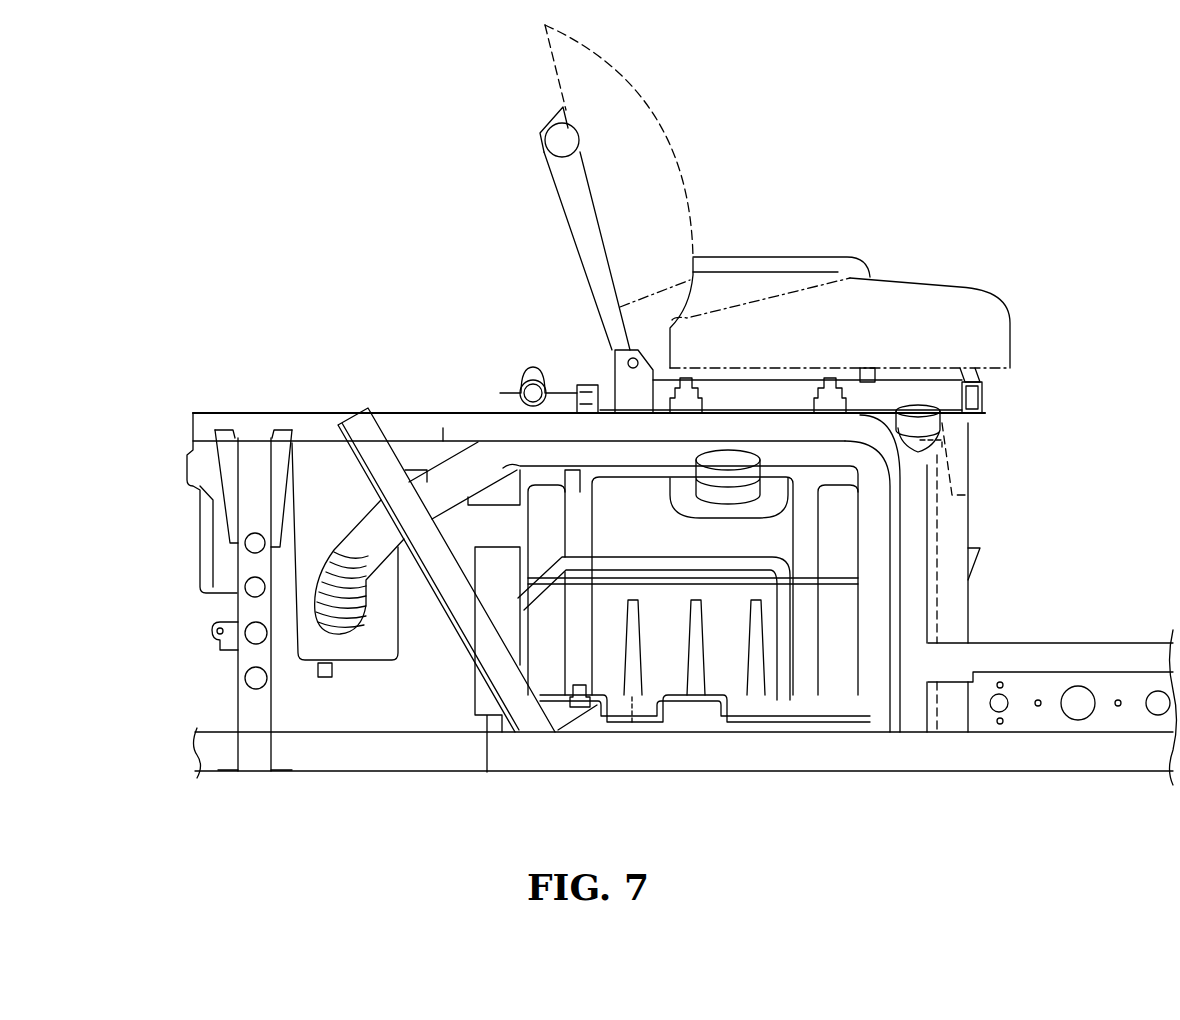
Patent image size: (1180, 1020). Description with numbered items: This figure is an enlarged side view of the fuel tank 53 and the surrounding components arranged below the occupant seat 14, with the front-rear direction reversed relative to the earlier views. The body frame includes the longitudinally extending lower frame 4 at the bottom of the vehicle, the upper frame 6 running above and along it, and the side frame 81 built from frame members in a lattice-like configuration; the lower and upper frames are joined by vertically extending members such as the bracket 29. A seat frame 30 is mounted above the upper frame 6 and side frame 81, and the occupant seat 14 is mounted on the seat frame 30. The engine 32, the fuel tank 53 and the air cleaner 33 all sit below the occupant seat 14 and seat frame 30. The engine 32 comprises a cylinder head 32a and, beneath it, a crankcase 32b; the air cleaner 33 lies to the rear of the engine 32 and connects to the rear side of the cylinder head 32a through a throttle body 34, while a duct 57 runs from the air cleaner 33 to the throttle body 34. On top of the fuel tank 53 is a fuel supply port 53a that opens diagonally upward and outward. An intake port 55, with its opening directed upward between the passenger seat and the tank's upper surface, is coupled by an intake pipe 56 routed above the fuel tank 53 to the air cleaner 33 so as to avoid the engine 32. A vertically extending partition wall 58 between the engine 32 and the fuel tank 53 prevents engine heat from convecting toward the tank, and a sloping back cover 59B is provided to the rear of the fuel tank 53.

The occupant seat 14 is at (662, 118).
The seat frame 30 is at (576, 243).
The fuel supply port 53a is at (727, 455).
The upper frame 6 is at (252, 413).
The air cleaner 33 is at (322, 466).
The back cover 59B is at (373, 417).
The duct 57 is at (420, 470).
The side frame 81 is at (443, 420).
The throttle body 34 is at (492, 492).
The intake pipe 56 is at (505, 458).
The cylinder head 32a is at (567, 468).
The intake port 55 is at (947, 413).
The bracket 29 is at (252, 708).
The lower frame 4 is at (353, 765).
The crankcase 32b is at (477, 690).
The engine 32 is at (493, 710).
The fuel tank 53 is at (718, 712).
The partition wall 58 is at (880, 712).